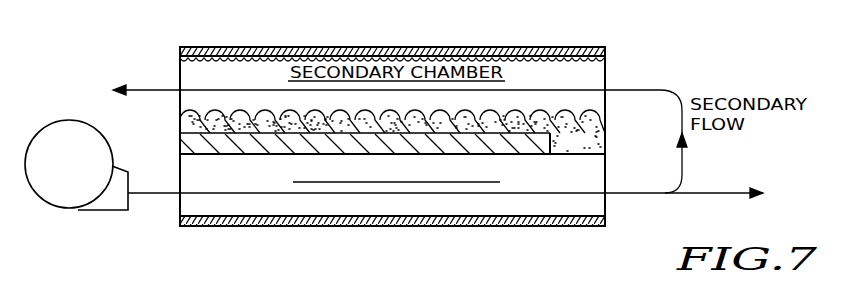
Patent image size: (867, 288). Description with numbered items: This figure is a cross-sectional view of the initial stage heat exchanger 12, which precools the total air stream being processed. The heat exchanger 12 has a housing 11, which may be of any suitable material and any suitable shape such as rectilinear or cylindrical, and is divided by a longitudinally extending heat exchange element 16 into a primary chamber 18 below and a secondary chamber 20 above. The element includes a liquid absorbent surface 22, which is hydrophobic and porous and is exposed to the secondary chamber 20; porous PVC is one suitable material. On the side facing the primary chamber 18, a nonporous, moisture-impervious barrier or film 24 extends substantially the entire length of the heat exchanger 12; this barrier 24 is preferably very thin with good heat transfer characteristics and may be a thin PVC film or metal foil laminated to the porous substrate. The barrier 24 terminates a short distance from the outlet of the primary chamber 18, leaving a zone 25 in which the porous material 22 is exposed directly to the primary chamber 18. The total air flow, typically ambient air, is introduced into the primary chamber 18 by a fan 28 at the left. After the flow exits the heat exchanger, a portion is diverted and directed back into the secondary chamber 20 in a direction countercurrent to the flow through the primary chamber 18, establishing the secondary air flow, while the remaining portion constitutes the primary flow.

The housing 11 is at (493, 47).
The initial stage heat exchanger 12 is at (598, 32).
The heat exchange element 16 is at (186, 155).
The primary chamber 18 is at (262, 183).
The secondary chamber 20 is at (212, 70).
The liquid absorbent surface 22 is at (346, 113).
The nonporous moisture-impervious barrier 24 is at (185, 141).
The exposed zone 25 is at (590, 157).
The fan 28 is at (80, 210).